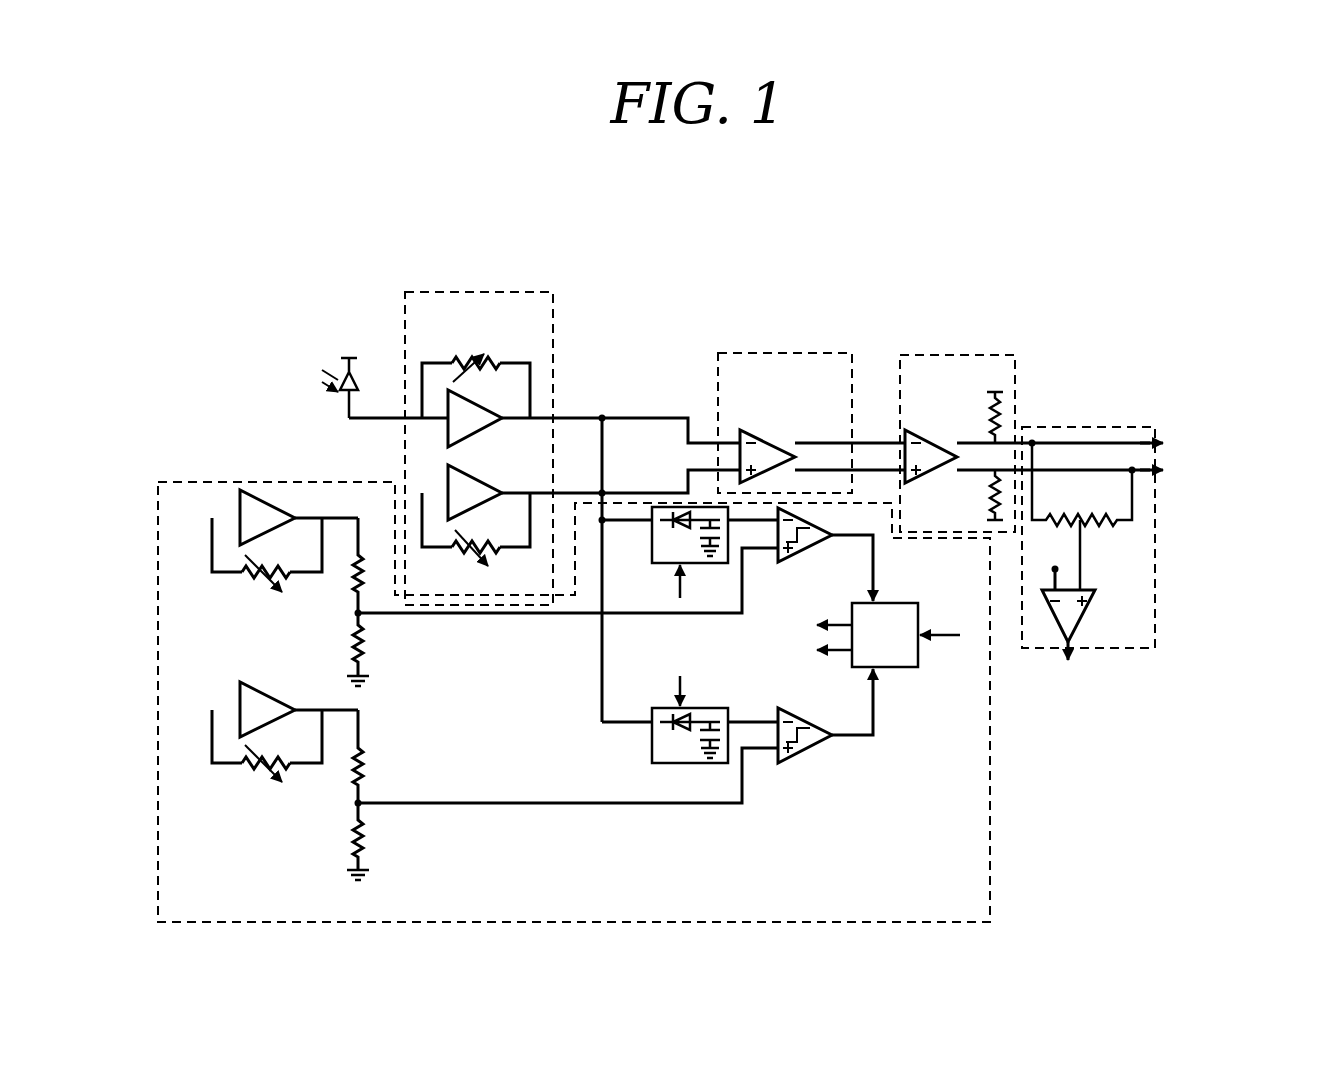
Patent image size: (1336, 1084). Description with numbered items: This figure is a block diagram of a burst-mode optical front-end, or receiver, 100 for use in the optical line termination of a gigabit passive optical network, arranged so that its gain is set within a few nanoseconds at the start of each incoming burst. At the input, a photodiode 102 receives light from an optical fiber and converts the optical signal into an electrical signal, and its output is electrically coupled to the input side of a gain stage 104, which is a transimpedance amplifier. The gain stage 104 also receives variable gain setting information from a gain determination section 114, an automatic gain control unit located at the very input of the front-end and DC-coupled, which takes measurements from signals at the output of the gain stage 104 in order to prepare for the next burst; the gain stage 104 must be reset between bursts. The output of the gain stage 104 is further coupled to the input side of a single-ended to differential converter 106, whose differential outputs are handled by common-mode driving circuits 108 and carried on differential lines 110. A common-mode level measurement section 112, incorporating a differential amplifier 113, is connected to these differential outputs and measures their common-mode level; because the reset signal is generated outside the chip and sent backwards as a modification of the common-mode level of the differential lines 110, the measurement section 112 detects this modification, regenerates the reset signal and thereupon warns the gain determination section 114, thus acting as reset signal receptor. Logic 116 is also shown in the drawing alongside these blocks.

The front-end 100 is at (1017, 254).
The photodiode 102 is at (320, 386).
The gain stage 104 is at (547, 377).
The single-ended to differential converter 106 is at (832, 353).
The common-mode driving circuits 108 is at (1005, 353).
The differential lines 110 is at (1216, 460).
The common-mode level measurement section 112 is at (1152, 578).
The differential amplifier 113 is at (1040, 599).
The gain determination section 114 is at (607, 702).
The logic 116 is at (890, 680).